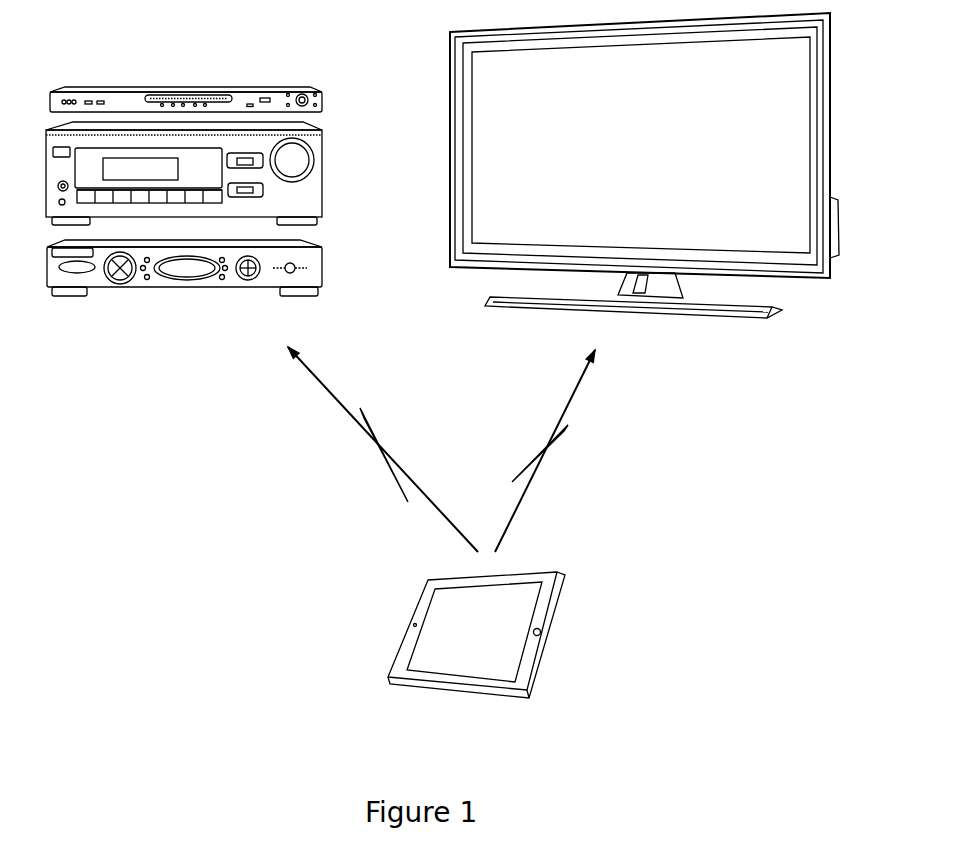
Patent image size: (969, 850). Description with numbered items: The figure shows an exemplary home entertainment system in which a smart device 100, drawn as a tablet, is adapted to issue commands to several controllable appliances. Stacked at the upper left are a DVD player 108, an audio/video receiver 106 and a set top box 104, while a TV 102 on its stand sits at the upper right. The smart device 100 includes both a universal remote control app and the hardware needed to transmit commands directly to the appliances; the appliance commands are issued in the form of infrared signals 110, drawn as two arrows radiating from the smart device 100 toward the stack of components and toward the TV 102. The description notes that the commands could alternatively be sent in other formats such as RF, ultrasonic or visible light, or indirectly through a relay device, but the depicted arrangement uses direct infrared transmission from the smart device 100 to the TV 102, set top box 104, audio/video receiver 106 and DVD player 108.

The smart device 100 is at (548, 648).
The TV 102 is at (807, 282).
The set top box 104 is at (322, 247).
The audio/video receiver 106 is at (320, 130).
The DVD player 108 is at (320, 92).
The infrared signals 110 is at (355, 436).